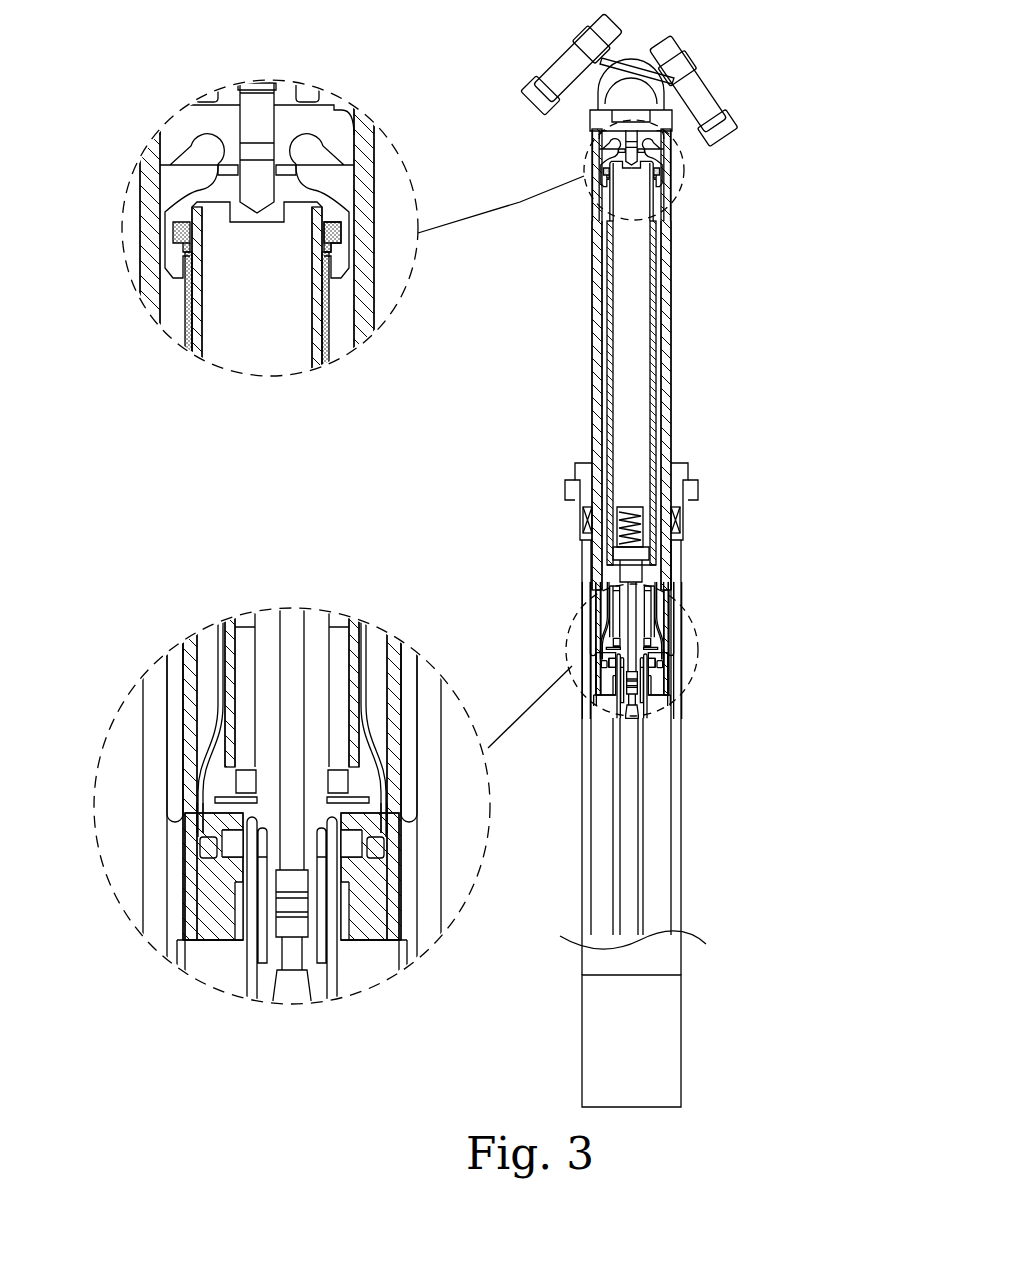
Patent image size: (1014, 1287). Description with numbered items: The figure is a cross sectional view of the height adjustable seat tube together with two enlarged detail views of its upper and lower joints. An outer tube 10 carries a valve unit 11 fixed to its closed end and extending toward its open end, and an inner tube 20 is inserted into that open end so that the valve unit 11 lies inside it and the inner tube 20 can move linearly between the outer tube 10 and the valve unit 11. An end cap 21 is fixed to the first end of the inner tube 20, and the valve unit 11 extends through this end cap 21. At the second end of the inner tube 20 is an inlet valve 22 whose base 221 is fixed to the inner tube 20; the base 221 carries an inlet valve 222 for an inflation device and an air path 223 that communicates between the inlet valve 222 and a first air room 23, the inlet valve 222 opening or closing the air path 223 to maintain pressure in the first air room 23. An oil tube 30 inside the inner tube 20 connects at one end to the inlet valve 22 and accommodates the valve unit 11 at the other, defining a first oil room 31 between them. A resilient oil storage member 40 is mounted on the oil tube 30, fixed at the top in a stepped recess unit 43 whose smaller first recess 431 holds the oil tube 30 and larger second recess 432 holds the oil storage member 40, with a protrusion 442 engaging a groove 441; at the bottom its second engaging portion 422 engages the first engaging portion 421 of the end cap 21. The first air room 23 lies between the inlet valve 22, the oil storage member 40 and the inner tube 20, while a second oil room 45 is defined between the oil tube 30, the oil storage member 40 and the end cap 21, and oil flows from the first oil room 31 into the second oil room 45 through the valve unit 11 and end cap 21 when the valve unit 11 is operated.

The outer tube 10 is at (688, 832).
The valve unit 11 is at (628, 528).
The inner tube 20 is at (684, 308).
The end cap 21 is at (212, 925).
The inlet valve 22 is at (212, 16).
The base 221 is at (167, 128).
The inlet valve 222 is at (260, 107).
The air path 223 is at (230, 168).
The first air room 23 is at (600, 408).
The oil tube 30 is at (315, 352).
The first oil room 31 is at (620, 338).
The oil storage member 40 is at (336, 362).
The first engaging portion 421 is at (200, 897).
The second engaging portion 422 is at (205, 845).
The recess unit 43 is at (447, 85).
The first recess 431 is at (335, 215).
The second recess 432 is at (340, 228).
The groove 441 is at (175, 238).
The protrusion 442 is at (175, 232).
The second oil room 45 is at (600, 628).